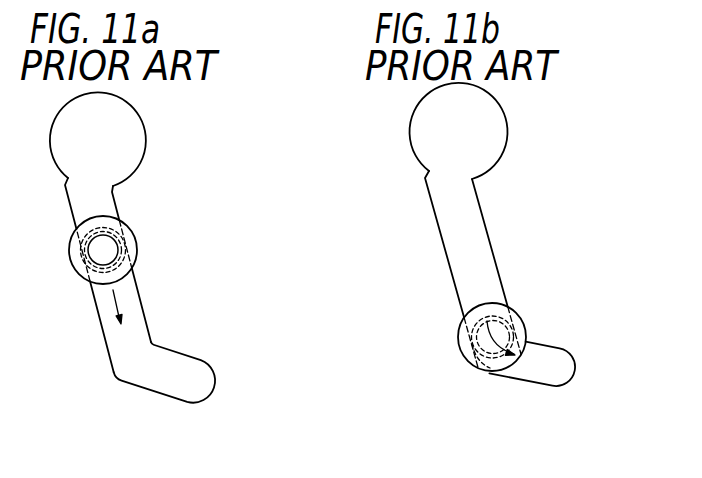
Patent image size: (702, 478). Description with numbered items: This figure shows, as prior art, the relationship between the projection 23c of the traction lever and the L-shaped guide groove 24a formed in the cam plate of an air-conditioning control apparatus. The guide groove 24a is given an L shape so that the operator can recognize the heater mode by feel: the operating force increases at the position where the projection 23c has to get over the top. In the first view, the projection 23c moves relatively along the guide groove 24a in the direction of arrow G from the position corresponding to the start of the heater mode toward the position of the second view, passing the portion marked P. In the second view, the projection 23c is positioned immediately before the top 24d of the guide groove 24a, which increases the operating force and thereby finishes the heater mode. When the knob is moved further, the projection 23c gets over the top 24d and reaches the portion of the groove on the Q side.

In FIG. 11a, the projection 23c is at (120, 232).
In FIG. 11b, the projection 23c is at (475, 328).
In FIG. 11a, the guide groove 24a is at (118, 335).
In FIG. 11b, the guide groove 24a is at (473, 207).
In FIG. 11a, the top 24d is at (157, 347).
In FIG. 11b, the top 24d is at (528, 327).
In FIG. 11a, the lever arm surface point P is at (51, 310).
In FIG. 11b, the lever arm surface point P is at (457, 250).
In FIG. 11a, the arrow G is at (140, 307).
In FIG. 11a, the Q side Q is at (192, 382).
In FIG. 11b, the Q side Q is at (555, 382).